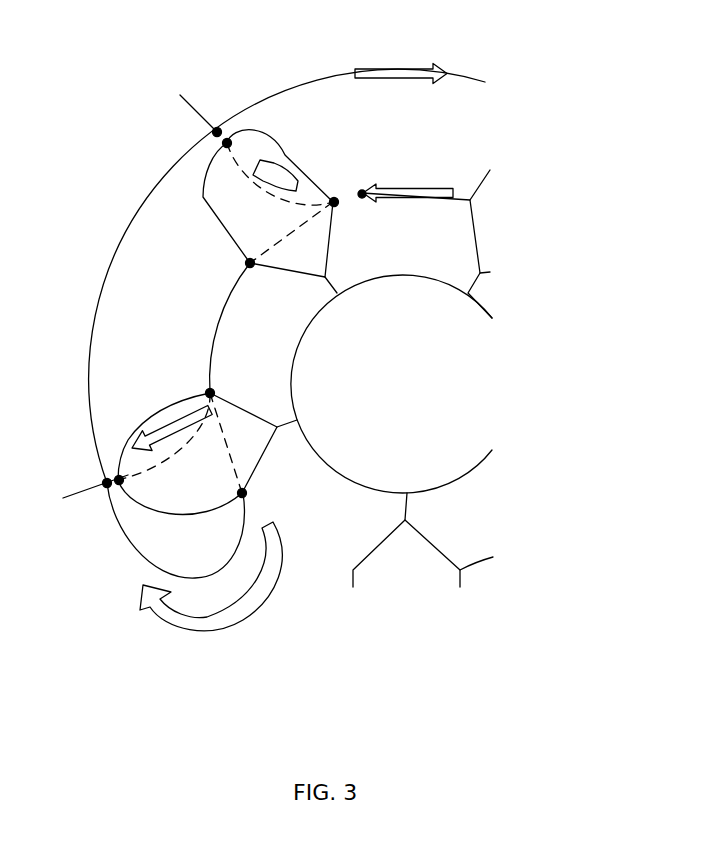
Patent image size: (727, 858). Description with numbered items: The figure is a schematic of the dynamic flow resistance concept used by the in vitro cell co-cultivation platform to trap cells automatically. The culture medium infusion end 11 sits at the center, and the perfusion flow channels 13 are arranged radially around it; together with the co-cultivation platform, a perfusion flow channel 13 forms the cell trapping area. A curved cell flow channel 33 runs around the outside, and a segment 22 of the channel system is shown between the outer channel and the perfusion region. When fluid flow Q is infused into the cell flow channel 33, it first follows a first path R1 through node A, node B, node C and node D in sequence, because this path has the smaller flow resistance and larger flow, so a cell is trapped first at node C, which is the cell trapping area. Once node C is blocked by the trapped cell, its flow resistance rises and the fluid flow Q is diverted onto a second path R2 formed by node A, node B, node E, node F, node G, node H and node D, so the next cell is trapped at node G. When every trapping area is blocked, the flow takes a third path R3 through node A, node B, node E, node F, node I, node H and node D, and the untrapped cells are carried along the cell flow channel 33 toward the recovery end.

The culture medium infusion end 11 is at (430, 375).
The perfusion flow channel 13 is at (333, 280).
The movable segment piece 22 is at (232, 215).
The cell flow channel 33 is at (308, 83).
The fluid flow Q is at (438, 197).
The first path R1 is at (287, 172).
The second path R2 is at (160, 430).
The third path R3 is at (263, 598).
The node A is at (368, 179).
The node B is at (340, 215).
The node C is at (223, 161).
The node D is at (201, 131).
The node E is at (255, 278).
The node F is at (217, 382).
The node G is at (139, 492).
The node H is at (89, 471).
The node I is at (253, 504).